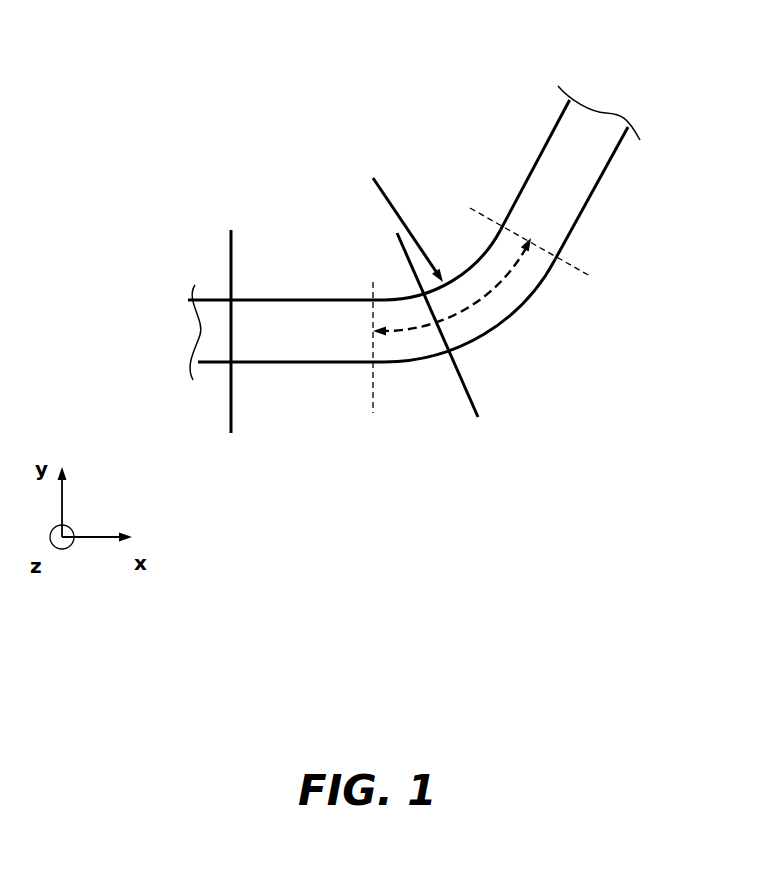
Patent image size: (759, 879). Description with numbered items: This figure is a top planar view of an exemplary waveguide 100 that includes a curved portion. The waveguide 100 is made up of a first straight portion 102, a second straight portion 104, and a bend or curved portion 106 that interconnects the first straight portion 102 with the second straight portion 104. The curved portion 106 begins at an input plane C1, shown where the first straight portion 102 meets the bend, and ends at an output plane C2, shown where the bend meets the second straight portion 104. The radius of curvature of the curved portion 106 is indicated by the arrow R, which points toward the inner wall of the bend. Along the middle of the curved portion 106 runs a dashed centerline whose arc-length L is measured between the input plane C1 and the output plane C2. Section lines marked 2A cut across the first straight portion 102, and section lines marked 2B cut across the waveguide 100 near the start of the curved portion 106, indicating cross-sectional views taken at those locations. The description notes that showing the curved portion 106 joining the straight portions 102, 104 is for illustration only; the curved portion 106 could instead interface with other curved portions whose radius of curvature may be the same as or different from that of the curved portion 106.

The waveguide 100 is at (222, 47).
The first straight portion 102 is at (309, 315).
The second straight portion 104 is at (585, 167).
The curved portion 106 is at (512, 352).
The arc-length L is at (503, 283).
The input plane C1 is at (373, 390).
The output plane C2 is at (585, 272).
The section line 2A is at (227, 420).
The section line 2B is at (472, 407).
The radius of curvature arrow R is at (382, 190).